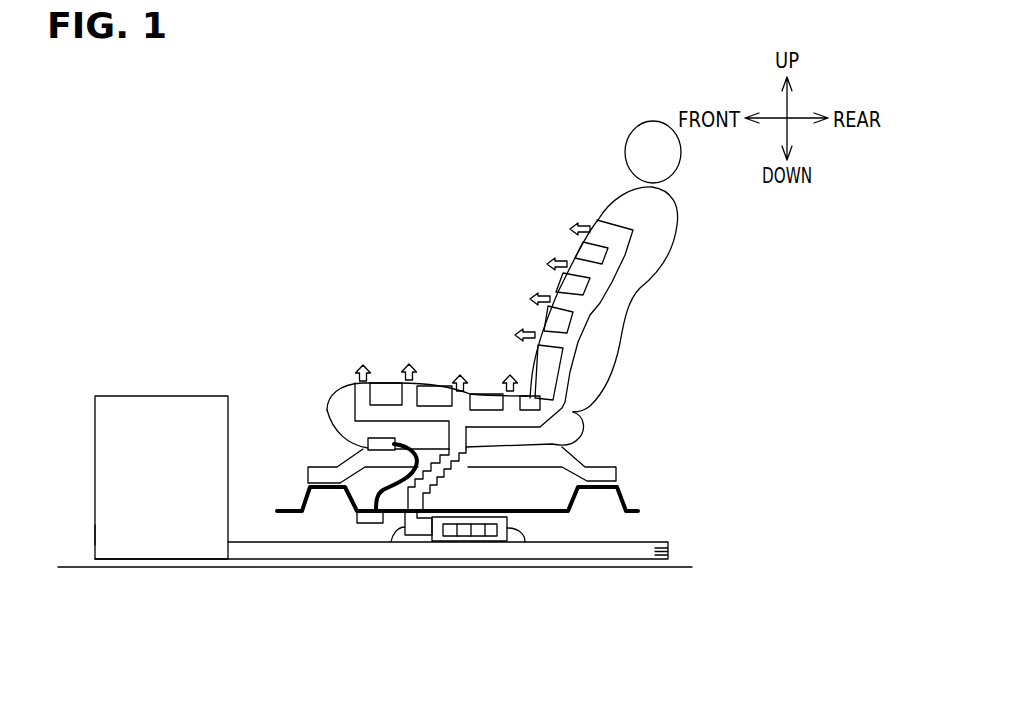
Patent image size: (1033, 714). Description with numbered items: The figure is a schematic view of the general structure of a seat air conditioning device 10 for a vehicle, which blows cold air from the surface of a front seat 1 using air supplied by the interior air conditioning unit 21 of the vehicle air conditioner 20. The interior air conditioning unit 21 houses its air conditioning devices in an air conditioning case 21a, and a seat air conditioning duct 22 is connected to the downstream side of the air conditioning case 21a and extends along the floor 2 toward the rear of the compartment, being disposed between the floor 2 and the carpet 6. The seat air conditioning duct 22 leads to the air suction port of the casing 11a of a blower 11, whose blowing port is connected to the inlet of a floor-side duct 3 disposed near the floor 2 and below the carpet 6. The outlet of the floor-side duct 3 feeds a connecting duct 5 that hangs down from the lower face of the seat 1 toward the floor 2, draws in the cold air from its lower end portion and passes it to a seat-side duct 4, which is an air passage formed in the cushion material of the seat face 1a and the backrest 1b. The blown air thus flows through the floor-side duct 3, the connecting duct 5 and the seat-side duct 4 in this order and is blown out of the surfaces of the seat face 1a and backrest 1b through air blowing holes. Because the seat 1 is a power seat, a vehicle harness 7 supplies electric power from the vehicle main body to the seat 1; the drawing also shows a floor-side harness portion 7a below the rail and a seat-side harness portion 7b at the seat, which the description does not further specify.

The front seat 1 is at (509, 285).
The seat face 1a is at (448, 367).
The backrest 1b is at (584, 285).
The floor 2 is at (640, 568).
The floor-side duct 3 is at (394, 548).
The seat-side duct 4 is at (607, 294).
The connecting duct 5 is at (447, 486).
The carpet 6 is at (627, 497).
The vehicle harness 7 is at (372, 492).
The hose inlet port 7a is at (368, 523).
The hose connector 7b is at (368, 438).
The seat air conditioning device 10 is at (571, 525).
The blower 11 is at (435, 533).
The casing 11a is at (524, 542).
The air conditioner 20 is at (363, 466).
The interior air conditioning unit 21 is at (174, 396).
The air conditioning case 21a is at (95, 533).
The seat air conditioning duct 22 is at (275, 560).